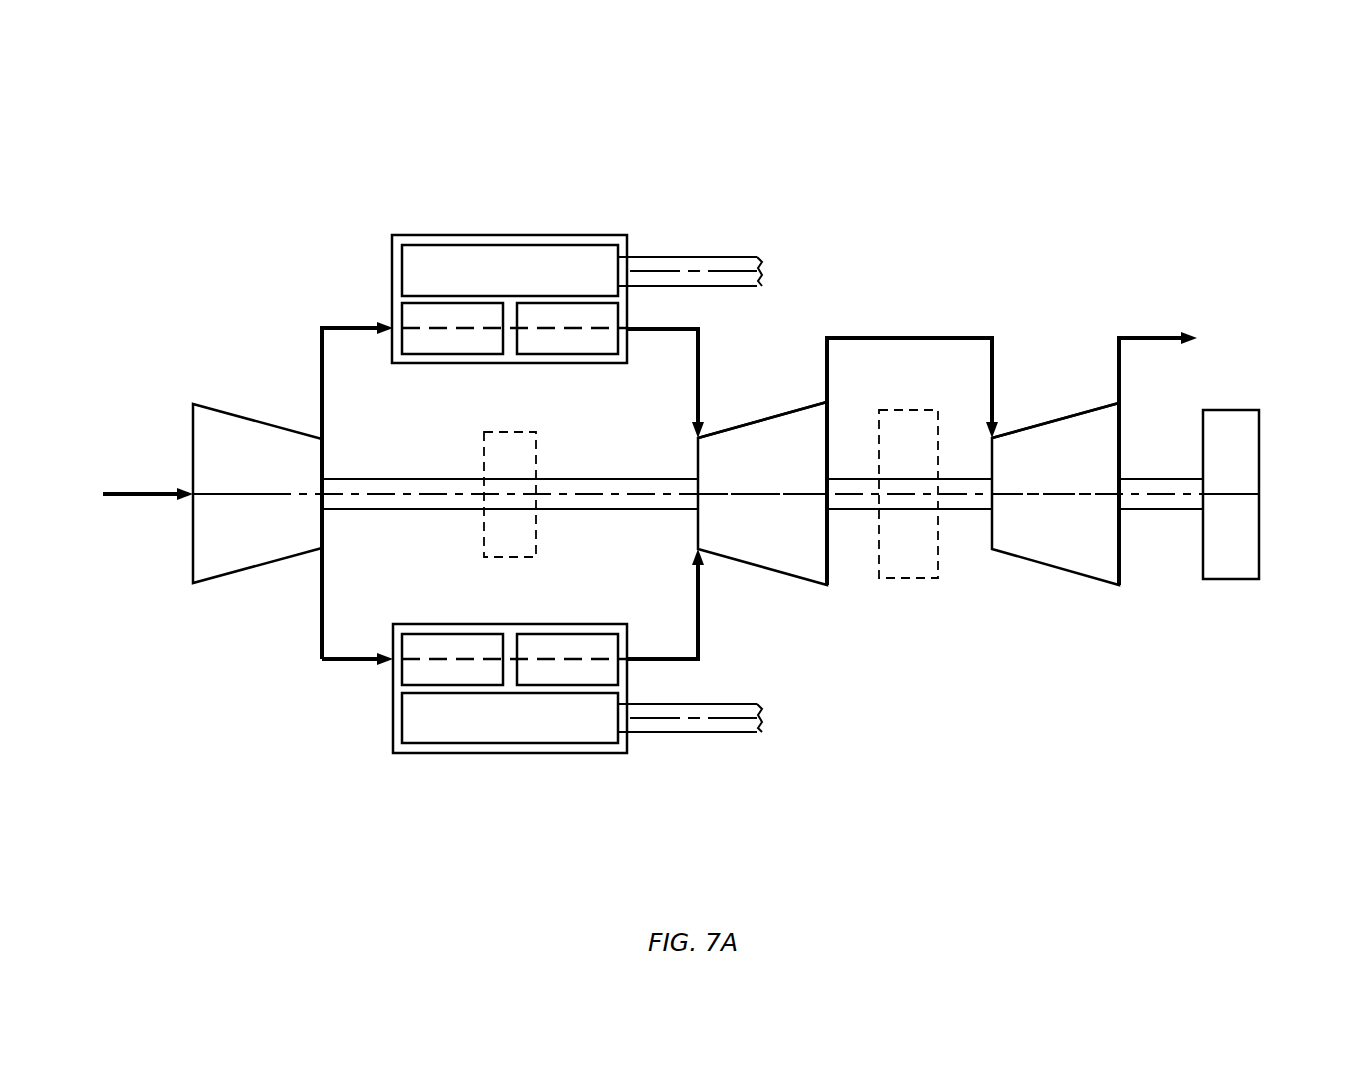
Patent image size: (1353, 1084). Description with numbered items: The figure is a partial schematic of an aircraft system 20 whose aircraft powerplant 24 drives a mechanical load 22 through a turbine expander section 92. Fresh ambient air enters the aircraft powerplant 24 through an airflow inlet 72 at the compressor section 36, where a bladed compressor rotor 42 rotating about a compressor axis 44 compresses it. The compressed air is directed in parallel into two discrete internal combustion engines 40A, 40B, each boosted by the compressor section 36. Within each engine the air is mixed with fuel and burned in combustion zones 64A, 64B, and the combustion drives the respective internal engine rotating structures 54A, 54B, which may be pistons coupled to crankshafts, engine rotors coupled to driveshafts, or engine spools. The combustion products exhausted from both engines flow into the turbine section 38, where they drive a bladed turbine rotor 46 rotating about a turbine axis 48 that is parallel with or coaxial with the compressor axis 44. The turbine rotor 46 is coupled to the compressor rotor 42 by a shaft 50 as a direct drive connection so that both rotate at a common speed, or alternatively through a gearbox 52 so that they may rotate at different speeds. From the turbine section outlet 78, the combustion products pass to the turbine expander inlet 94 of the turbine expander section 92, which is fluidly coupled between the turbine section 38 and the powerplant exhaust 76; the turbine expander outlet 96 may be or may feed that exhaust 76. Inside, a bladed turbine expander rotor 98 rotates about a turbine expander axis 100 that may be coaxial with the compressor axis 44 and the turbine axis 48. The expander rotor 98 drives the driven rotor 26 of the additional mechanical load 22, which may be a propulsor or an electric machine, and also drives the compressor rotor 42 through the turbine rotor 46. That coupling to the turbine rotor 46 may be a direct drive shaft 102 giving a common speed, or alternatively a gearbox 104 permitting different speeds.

The aircraft system 20 is at (134, 114).
The mechanical load 22 is at (1263, 602).
The aircraft powerplant 24 is at (248, 124).
The driven rotor 26 is at (1262, 450).
The compressor section 36 is at (218, 543).
The turbine section 38 is at (785, 547).
The internal combustion engine 40A is at (560, 287).
The internal combustion engine 40B is at (567, 714).
The compressor rotor 42 is at (193, 535).
The compressor axis 44 is at (263, 490).
The turbine rotor 46 is at (836, 567).
The turbine axis 48 is at (750, 497).
The shaft 50 is at (658, 511).
The gearbox 52 is at (484, 523).
The rotating structure 54A is at (528, 245).
The rotating structure 54B is at (510, 745).
The combustion zone 64A is at (423, 354).
The combustion zone 64B is at (466, 632).
The airflow inlet 72 is at (115, 490).
The exhaust 76 is at (1165, 336).
The turbine section outlet 78 is at (826, 400).
The turbine expander section 92 is at (1099, 527).
The turbine expander inlet 94 is at (993, 437).
The turbine expander outlet 96 is at (1122, 402).
The turbine expander rotor 98 is at (1122, 561).
The turbine expander axis 100 is at (1028, 497).
The shaft 102 is at (963, 478).
The gearbox 104 is at (903, 580).